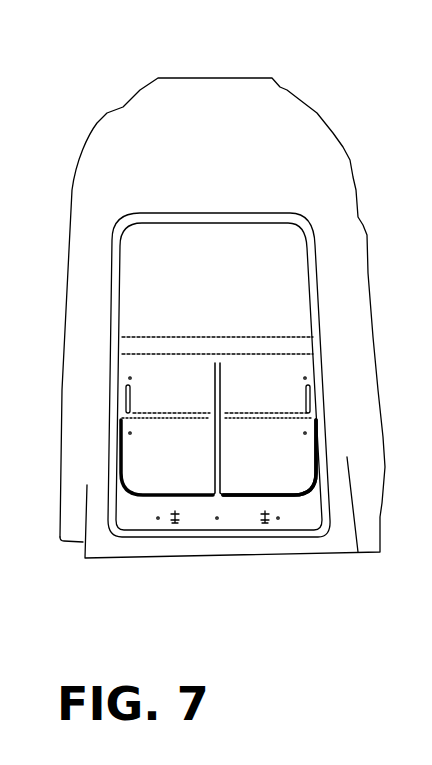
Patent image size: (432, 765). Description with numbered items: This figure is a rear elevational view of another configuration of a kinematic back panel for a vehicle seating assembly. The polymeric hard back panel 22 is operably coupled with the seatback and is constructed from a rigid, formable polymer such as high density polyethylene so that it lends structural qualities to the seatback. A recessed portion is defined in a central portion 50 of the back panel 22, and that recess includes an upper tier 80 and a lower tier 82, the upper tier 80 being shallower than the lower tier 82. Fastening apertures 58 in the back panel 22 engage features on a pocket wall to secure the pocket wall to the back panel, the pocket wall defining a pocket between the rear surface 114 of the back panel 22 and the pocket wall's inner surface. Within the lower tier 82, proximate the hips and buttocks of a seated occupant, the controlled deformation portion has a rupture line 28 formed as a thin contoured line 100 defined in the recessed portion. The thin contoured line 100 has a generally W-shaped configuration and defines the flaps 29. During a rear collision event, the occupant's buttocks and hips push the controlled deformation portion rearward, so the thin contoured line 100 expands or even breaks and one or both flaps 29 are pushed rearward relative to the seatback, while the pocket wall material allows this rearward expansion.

The hard back panel 22 is at (247, 110).
The central portion 50 is at (160, 255).
The upper tier 80 is at (275, 263).
The lower tier 82 is at (258, 388).
The fastening apertures 58 is at (310, 400).
The flaps 29 is at (184, 465).
The rear surface 114 is at (288, 442).
The rupture line 28 is at (242, 497).
The thin contoured line 100 is at (202, 500).